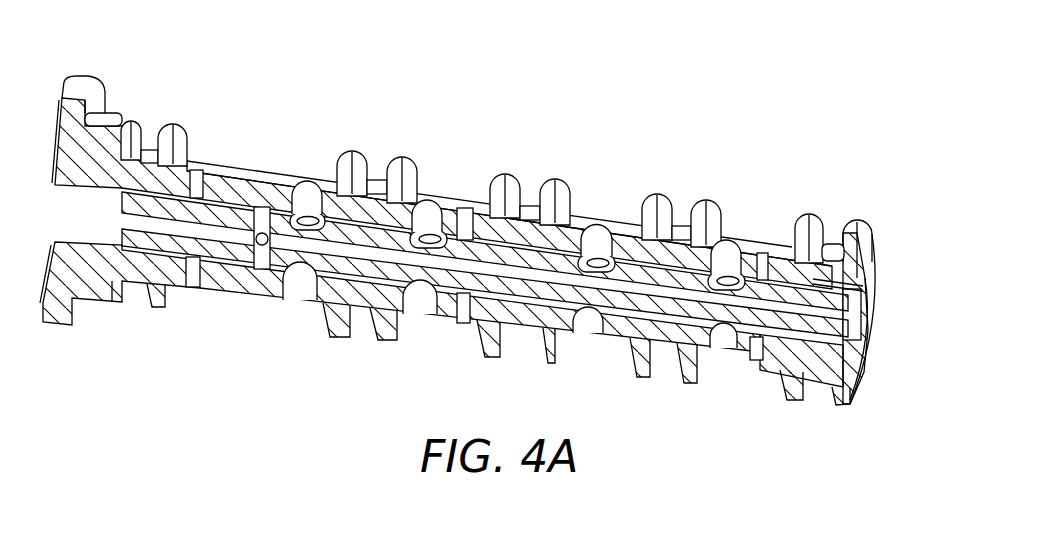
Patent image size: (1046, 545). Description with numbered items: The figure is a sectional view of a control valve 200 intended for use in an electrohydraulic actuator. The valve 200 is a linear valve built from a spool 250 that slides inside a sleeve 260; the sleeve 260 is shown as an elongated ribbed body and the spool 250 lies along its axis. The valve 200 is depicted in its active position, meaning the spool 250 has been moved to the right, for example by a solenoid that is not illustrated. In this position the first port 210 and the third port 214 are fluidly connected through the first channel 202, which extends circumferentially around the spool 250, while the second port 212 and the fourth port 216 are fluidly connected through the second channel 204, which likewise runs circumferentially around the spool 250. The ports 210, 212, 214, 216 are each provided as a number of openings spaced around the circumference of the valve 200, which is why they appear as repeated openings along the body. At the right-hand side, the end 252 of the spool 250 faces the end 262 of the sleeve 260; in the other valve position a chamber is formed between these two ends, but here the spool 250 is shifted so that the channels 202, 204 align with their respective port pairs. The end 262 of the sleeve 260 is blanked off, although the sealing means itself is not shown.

The control valve 200 is at (488, 256).
The first channel 202 is at (668, 270).
The second channel 204 is at (360, 200).
The first port 210 is at (733, 250).
The second port 212 is at (307, 190).
The third port 214 is at (597, 232).
The fourth port 216 is at (428, 215).
The spool 250 is at (790, 376).
The end of the spool 252 is at (860, 308).
The sleeve 260 is at (820, 262).
The end of the sleeve 262 is at (858, 281).